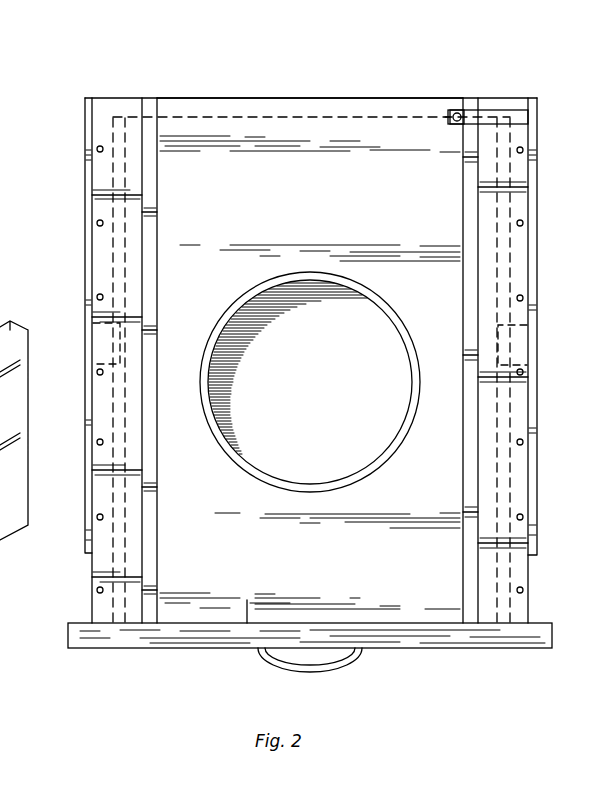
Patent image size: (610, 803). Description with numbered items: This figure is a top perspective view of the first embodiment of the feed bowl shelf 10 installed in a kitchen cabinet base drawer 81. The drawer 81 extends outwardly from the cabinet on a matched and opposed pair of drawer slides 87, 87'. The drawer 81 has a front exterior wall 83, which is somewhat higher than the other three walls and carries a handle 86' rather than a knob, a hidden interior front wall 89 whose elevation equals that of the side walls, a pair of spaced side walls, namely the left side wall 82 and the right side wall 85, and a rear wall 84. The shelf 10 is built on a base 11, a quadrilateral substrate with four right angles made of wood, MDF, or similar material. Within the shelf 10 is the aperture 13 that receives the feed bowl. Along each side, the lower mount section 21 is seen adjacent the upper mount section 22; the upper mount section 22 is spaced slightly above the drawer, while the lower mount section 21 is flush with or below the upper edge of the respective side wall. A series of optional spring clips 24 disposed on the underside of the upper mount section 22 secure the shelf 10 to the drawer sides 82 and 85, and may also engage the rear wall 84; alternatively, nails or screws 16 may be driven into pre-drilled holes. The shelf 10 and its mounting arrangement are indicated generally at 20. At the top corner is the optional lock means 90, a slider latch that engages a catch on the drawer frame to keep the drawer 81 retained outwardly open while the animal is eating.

The feed bowl shelf 10 is at (325, 183).
The base 11 is at (240, 175).
The aperture 13 is at (360, 472).
The nails/screws 16 is at (315, 385).
The frame assembly 20 is at (127, 553).
The lower mount section (LMS) 21 is at (152, 182).
The upper mount section (UMS) 22 is at (100, 245).
The spring clips 24 is at (97, 340).
The drawer 81 is at (92, 527).
The left side wall 82 is at (92, 418).
The front exterior wall 83 is at (188, 648).
The rear wall 84 is at (340, 98).
The right side wall 85 is at (528, 470).
The handle 86' is at (332, 670).
The drawer slide 87 is at (60, 331).
The drawer slide 87' is at (555, 342).
The hidden interior front wall 89 is at (247, 600).
The lock means 90 is at (492, 104).